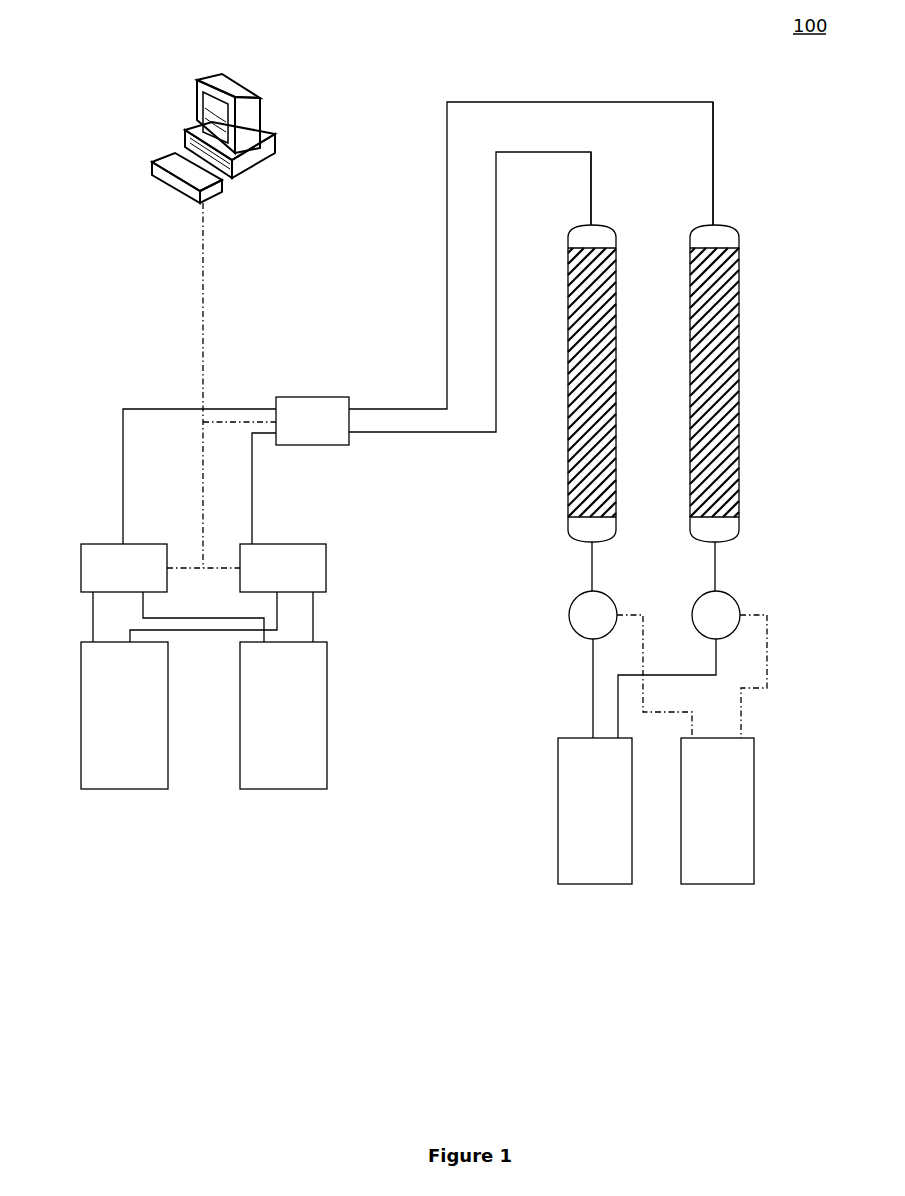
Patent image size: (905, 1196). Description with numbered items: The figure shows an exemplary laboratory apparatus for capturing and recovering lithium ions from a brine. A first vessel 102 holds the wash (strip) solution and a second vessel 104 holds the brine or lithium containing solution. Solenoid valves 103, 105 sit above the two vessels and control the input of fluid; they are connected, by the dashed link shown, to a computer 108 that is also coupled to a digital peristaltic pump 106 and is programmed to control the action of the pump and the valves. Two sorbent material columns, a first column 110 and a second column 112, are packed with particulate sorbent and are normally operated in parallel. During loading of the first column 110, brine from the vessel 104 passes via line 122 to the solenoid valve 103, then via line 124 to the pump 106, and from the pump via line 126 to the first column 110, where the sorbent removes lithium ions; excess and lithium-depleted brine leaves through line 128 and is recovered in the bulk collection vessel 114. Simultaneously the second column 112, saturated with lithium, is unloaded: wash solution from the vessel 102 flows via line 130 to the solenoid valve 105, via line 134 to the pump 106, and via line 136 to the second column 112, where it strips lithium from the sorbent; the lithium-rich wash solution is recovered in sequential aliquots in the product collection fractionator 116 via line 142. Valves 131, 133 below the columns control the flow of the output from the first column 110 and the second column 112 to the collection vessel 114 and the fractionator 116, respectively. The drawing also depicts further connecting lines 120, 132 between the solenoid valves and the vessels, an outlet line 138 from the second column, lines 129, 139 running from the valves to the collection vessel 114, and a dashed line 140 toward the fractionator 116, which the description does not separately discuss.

The first vessel 102 is at (80, 679).
The solenoid valve 103 is at (80, 568).
The second vessel 104 is at (327, 690).
The solenoid valve 105 is at (326, 568).
The digital peristaltic pump 106 is at (300, 397).
The computer 108 is at (278, 138).
The first sorbent material column 110 is at (616, 300).
The second sorbent material column 112 is at (739, 300).
The bulk collection vessel 114 is at (558, 788).
The product collection fractionator 116 is at (754, 788).
The line from first pump to first reservoir 120 is at (91, 628).
The line 122 is at (165, 618).
The line 124 is at (123, 494).
The line 126 is at (591, 176).
The line 128 is at (593, 578).
The line from first valve to first collection vessel 129 is at (593, 700).
The line 130 is at (180, 630).
The valve 131 is at (569, 615).
The line from second pump to second reservoir 132 is at (313, 615).
The valve 133 is at (692, 615).
The line 134 is at (252, 494).
The line 136 is at (713, 176).
The second column outlet line 138 is at (716, 578).
The line from second valve to first collection vessel 139 is at (620, 725).
The optional line from first valve to second collection vessel 140 is at (658, 712).
The line 142 is at (767, 642).